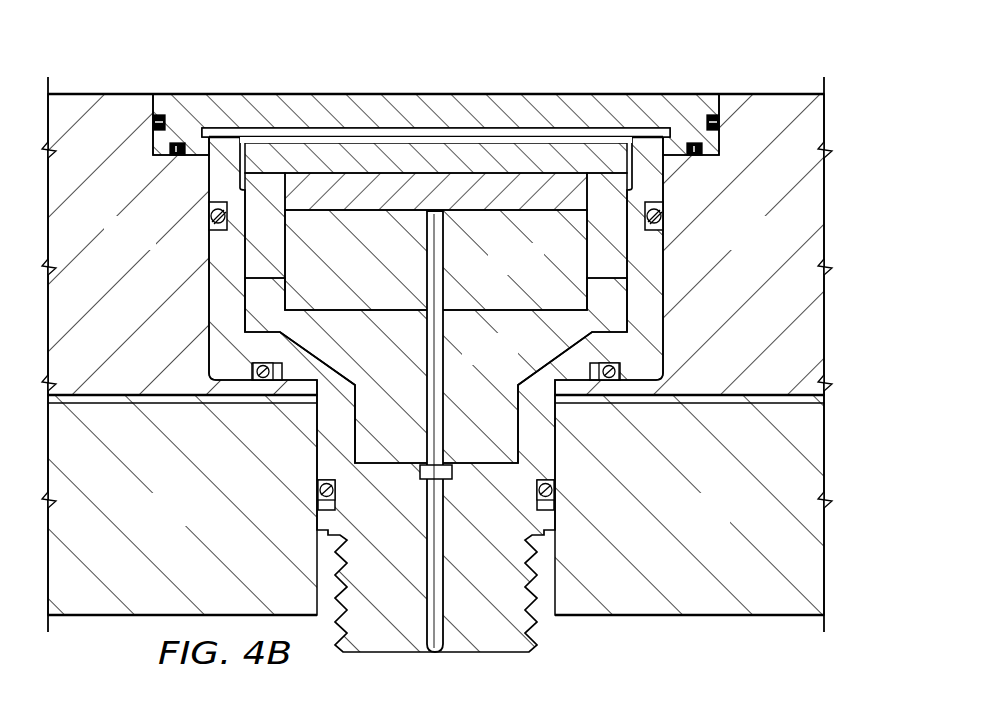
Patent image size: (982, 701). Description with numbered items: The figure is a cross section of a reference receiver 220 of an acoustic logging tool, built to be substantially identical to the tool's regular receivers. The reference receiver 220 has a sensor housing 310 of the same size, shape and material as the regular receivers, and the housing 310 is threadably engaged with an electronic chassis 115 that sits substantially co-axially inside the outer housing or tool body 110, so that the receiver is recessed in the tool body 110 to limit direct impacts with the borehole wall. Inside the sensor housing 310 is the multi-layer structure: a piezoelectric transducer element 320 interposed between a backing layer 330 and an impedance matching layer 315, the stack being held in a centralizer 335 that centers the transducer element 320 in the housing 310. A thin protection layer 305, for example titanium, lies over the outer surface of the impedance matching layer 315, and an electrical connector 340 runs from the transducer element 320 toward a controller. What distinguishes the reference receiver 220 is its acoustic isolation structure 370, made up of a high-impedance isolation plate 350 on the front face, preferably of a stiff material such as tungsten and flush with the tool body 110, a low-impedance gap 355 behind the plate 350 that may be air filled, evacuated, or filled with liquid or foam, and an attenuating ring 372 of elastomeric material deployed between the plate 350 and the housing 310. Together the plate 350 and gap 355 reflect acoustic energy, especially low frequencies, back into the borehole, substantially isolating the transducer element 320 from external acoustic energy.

The tool body 110 is at (152, 246).
The electronic chassis 115 is at (190, 522).
The reference receiver 220 is at (278, 79).
The protection layer 305 is at (436, 142).
The sensor housing 310 is at (215, 305).
The impedance matching layer 315 is at (596, 152).
The piezoelectric transducer element 320 is at (490, 183).
The backing layer 330 is at (536, 271).
The centralizer 335 is at (510, 361).
The electrical connector 340 is at (427, 509).
The isolation plate 350 is at (636, 104).
The gap 355 is at (358, 138).
The acoustic isolation structure 370 is at (540, 92).
The attenuating ring 372 is at (202, 138).